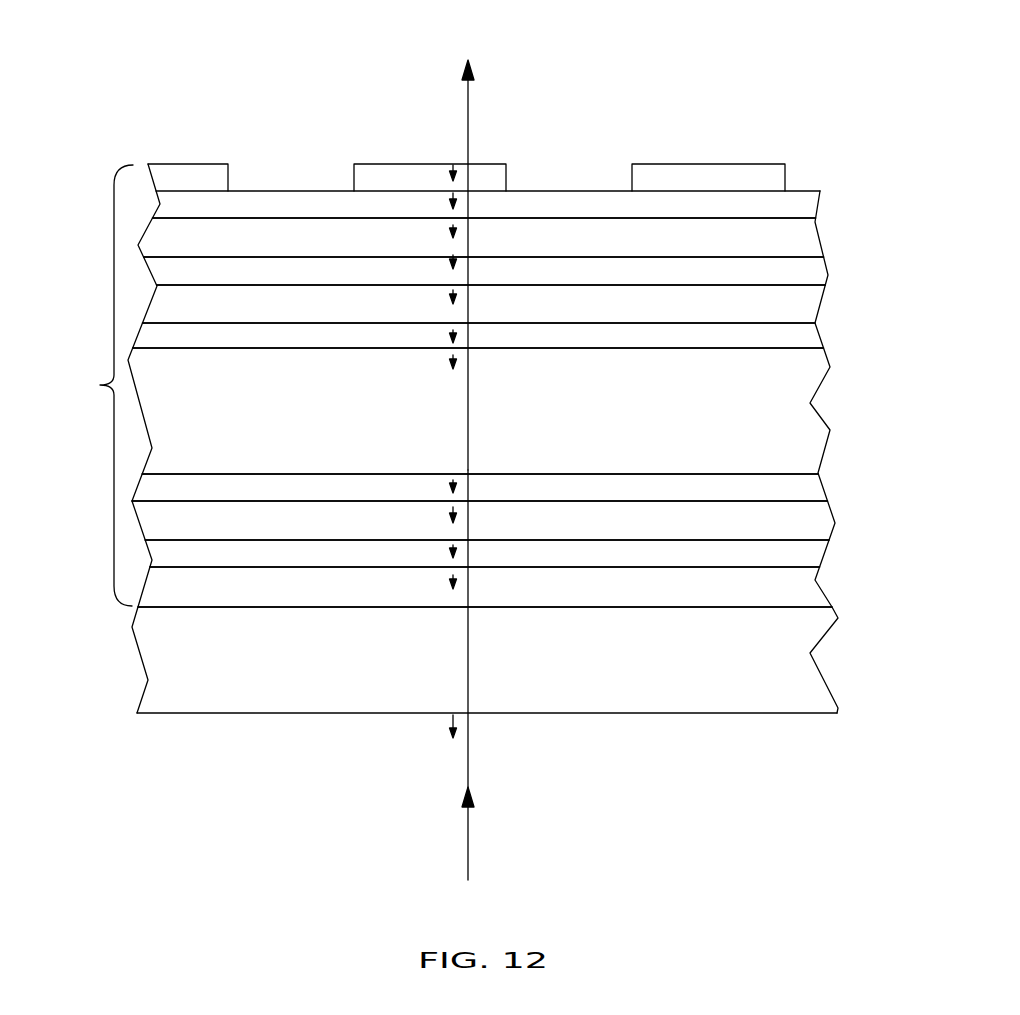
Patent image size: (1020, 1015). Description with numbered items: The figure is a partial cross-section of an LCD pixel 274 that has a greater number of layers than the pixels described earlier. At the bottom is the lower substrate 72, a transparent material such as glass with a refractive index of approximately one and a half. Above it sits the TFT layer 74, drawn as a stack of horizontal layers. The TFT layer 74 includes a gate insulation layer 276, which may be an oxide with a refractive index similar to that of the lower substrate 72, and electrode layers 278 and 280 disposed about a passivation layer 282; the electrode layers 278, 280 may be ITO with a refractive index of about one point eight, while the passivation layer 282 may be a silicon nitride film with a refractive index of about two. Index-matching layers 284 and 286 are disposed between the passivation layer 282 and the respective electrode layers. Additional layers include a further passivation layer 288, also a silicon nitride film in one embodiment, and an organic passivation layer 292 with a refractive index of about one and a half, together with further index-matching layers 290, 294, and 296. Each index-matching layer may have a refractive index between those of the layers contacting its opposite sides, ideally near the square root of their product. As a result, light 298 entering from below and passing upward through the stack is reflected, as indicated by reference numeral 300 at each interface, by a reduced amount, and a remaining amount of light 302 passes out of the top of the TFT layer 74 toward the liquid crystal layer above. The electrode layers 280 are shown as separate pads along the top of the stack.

The pixel 274 is at (110, 112).
The lower substrate 72 is at (147, 648).
The TFT layer 74 is at (100, 385).
The electrode layer 280 is at (188, 175).
The index-matching layer 286 is at (805, 205).
The passivation layer 282 is at (805, 243).
The index-matching layer 284 is at (810, 272).
The electrode layer 278 is at (805, 305).
The index-matching layer 296 is at (805, 338).
The organic passivation layer 292 is at (803, 390).
The index-matching layer 294 is at (805, 487).
The passivation layer 288 is at (810, 522).
The index-matching layer 290 is at (808, 560).
The gate insulation layer 276 is at (808, 592).
The reflected light 300 is at (450, 168).
The remaining light 302 is at (468, 107).
The light 298 is at (468, 837).